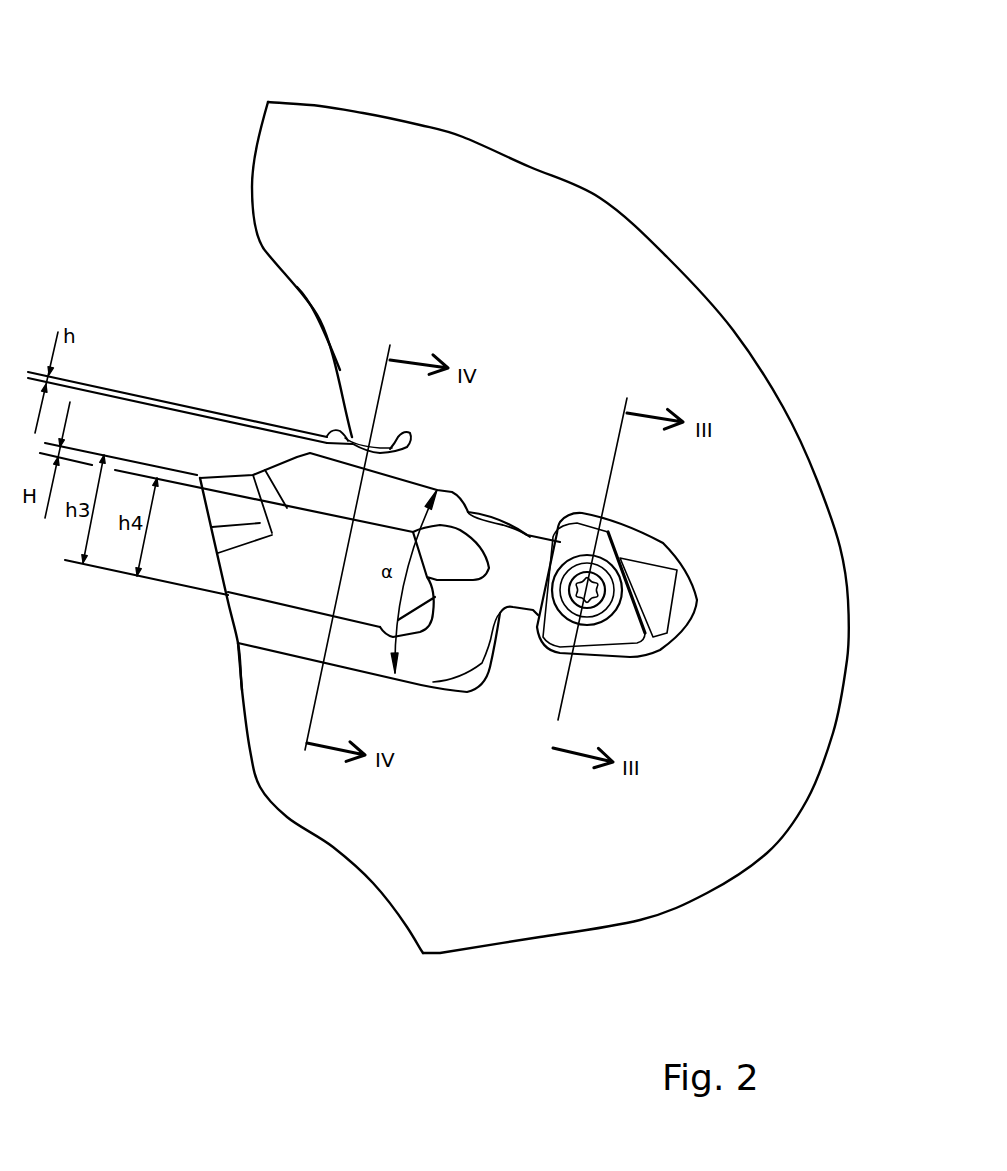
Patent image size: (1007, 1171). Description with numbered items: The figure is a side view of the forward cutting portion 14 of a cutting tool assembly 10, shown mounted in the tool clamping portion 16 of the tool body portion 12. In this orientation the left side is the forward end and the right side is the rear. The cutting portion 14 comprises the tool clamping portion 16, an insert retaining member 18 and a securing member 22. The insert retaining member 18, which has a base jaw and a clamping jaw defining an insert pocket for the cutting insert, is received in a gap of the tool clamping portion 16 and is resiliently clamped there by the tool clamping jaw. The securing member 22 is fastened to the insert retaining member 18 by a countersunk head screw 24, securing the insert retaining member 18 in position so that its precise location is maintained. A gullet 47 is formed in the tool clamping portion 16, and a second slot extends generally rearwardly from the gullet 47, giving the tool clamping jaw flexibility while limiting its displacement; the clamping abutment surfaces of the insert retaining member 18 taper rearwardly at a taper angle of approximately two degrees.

The cutting tool assembly 10 is at (125, 140).
The tool body portion 12 is at (383, 809).
The cutting portion 14 is at (142, 757).
The tool clamping portion 16 is at (202, 360).
The insert retaining member 18 is at (268, 623).
The securing member 22 is at (607, 550).
The countersunk head screw 24 is at (582, 613).
The gullet 47 is at (268, 347).